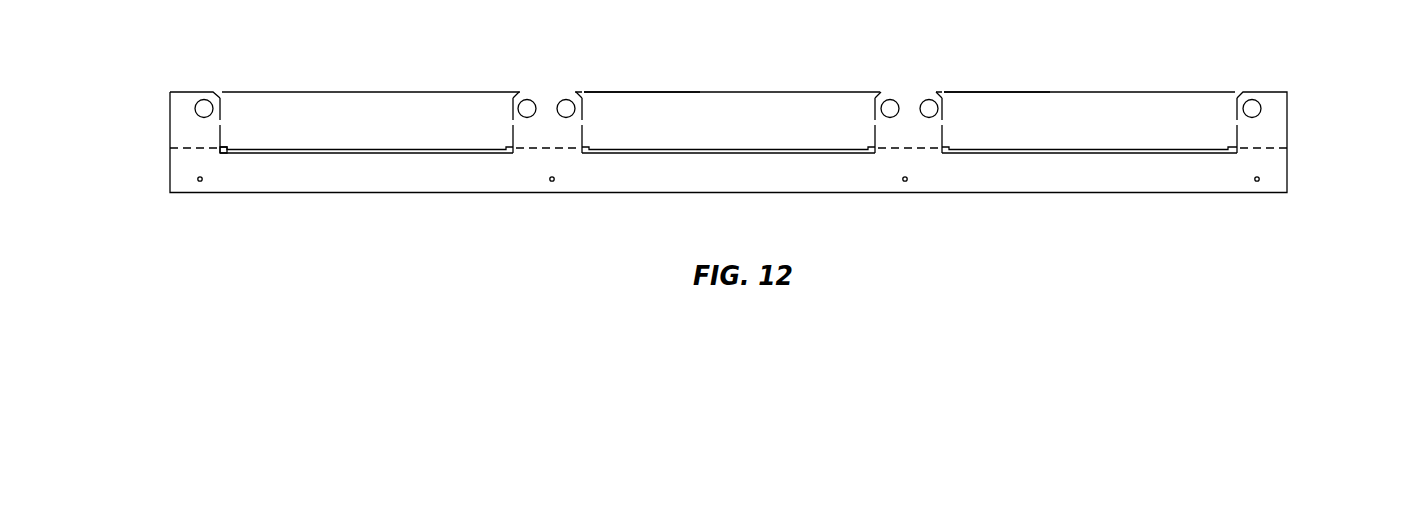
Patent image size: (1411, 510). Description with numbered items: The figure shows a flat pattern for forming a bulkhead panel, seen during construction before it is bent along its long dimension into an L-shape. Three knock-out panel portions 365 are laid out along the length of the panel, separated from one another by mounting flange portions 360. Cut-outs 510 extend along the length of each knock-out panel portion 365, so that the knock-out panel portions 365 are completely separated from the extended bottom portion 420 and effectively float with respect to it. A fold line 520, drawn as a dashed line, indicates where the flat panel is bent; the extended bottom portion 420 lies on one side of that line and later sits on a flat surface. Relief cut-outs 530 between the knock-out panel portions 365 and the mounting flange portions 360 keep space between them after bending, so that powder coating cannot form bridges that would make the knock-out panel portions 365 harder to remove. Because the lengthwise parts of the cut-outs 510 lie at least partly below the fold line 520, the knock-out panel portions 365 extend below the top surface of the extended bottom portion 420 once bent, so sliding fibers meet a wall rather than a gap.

The cut-out 510 is at (342, 148).
The mounting flange portion 360 is at (543, 92).
The knock-out panel portion 365 is at (693, 92).
The fold line 520 is at (187, 148).
The relief cut-out 530 is at (224, 153).
The extended bottom portion 420 is at (1028, 195).